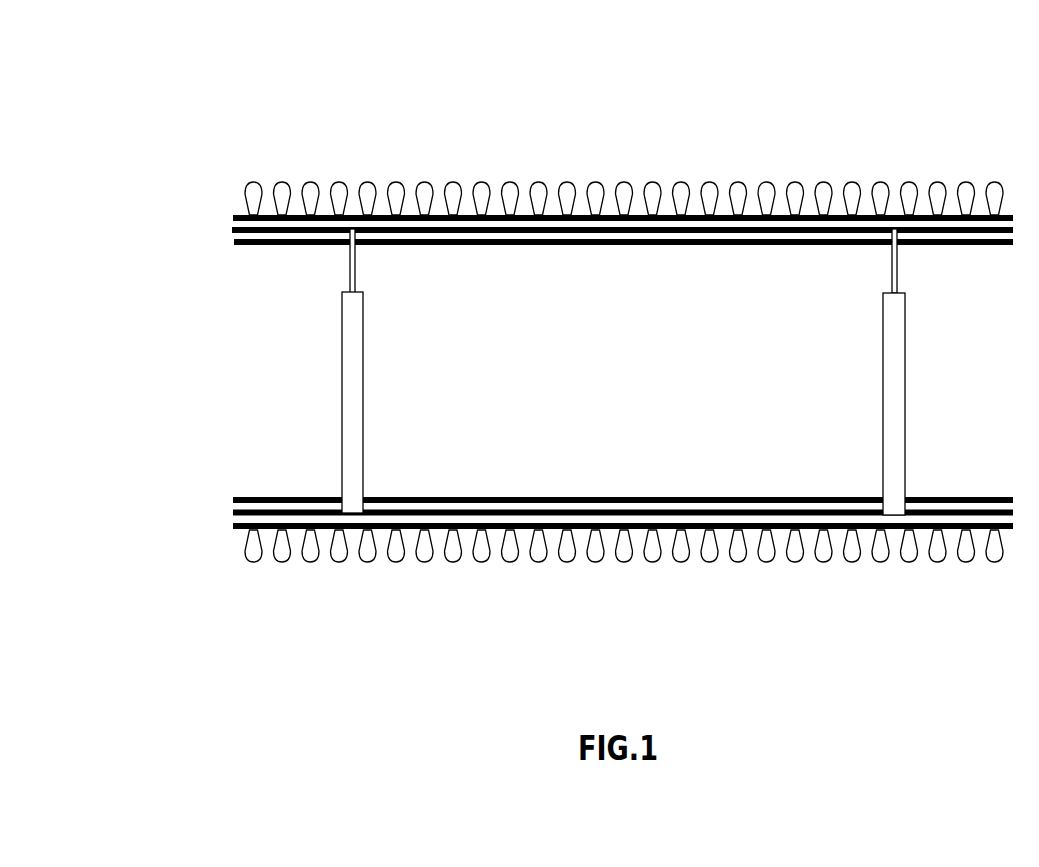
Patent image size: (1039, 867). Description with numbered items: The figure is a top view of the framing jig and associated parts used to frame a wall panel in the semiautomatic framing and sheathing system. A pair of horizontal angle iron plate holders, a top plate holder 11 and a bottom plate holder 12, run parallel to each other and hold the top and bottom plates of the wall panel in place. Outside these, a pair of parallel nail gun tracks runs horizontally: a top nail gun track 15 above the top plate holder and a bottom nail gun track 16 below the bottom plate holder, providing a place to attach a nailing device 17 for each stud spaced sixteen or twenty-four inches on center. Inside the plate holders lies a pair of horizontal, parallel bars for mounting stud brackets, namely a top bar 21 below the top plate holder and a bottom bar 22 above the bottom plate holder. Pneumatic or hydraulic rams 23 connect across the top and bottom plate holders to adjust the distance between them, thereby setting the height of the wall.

The top plate holder 11 is at (232, 228).
The bottom plate holder 12 is at (233, 512).
The top nail gun track 15 is at (233, 215).
The bottom nail gun track 16 is at (233, 526).
The nailing device 17 is at (860, 186).
The top bar 21 is at (234, 241).
The bottom bar 22 is at (233, 498).
The pneumatic or hydraulic ram 23 is at (356, 393).